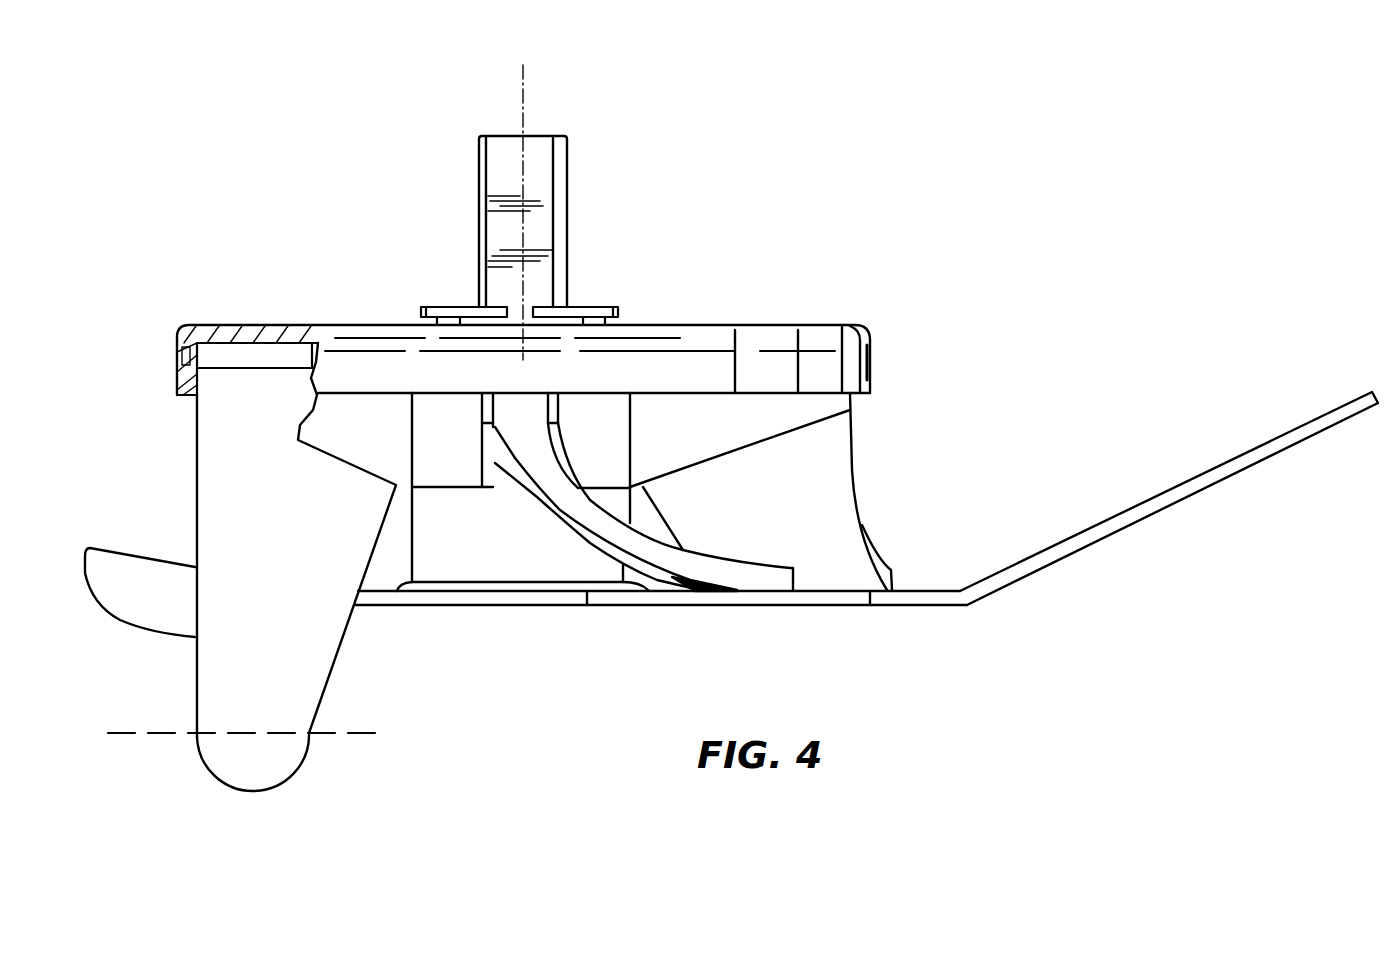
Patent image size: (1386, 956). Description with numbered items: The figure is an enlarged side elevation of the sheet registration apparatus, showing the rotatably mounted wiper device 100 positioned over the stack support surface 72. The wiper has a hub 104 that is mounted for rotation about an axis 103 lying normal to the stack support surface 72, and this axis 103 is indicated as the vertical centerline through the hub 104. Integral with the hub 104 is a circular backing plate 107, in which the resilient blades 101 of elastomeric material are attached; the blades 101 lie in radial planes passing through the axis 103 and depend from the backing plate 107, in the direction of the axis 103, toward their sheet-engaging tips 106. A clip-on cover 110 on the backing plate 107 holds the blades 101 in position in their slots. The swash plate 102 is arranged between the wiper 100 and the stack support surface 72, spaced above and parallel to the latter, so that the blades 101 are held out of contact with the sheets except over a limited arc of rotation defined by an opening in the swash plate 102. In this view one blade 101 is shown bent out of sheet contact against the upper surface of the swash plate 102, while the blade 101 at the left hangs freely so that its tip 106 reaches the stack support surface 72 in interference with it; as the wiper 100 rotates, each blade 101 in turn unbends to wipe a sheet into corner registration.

The stack support surface 72 is at (120, 733).
The wiper device 100 is at (888, 322).
The resilient blades 101 is at (205, 468).
The swash plate 102 is at (1080, 530).
The axis 103 is at (522, 107).
The hub 104 is at (597, 303).
The sheet-engaging tips 106 is at (232, 788).
The circular backing plate 107 is at (685, 413).
The clip-on cover 110 is at (237, 322).